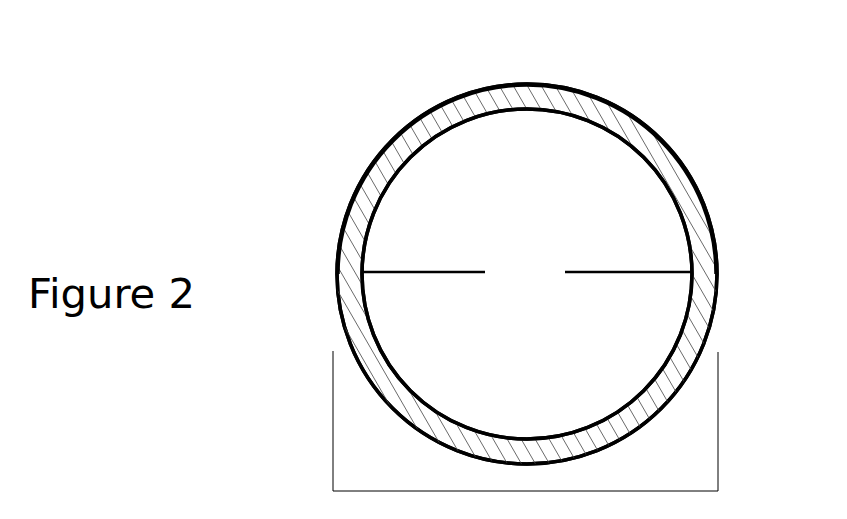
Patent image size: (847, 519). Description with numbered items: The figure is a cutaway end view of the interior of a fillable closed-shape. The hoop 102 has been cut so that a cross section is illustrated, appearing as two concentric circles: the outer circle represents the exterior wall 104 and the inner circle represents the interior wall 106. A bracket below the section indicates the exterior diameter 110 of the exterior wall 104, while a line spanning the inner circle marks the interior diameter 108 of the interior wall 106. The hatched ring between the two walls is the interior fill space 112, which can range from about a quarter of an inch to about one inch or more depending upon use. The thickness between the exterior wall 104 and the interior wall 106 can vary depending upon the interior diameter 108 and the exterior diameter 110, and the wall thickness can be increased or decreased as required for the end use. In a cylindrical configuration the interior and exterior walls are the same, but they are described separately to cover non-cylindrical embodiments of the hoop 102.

The hoop 102 is at (760, 131).
The exterior wall 104 is at (717, 247).
The interior wall 106 is at (668, 192).
The interior diameter 108 is at (527, 273).
The exterior diameter 110 is at (718, 478).
The interior fill space 112 is at (457, 108).